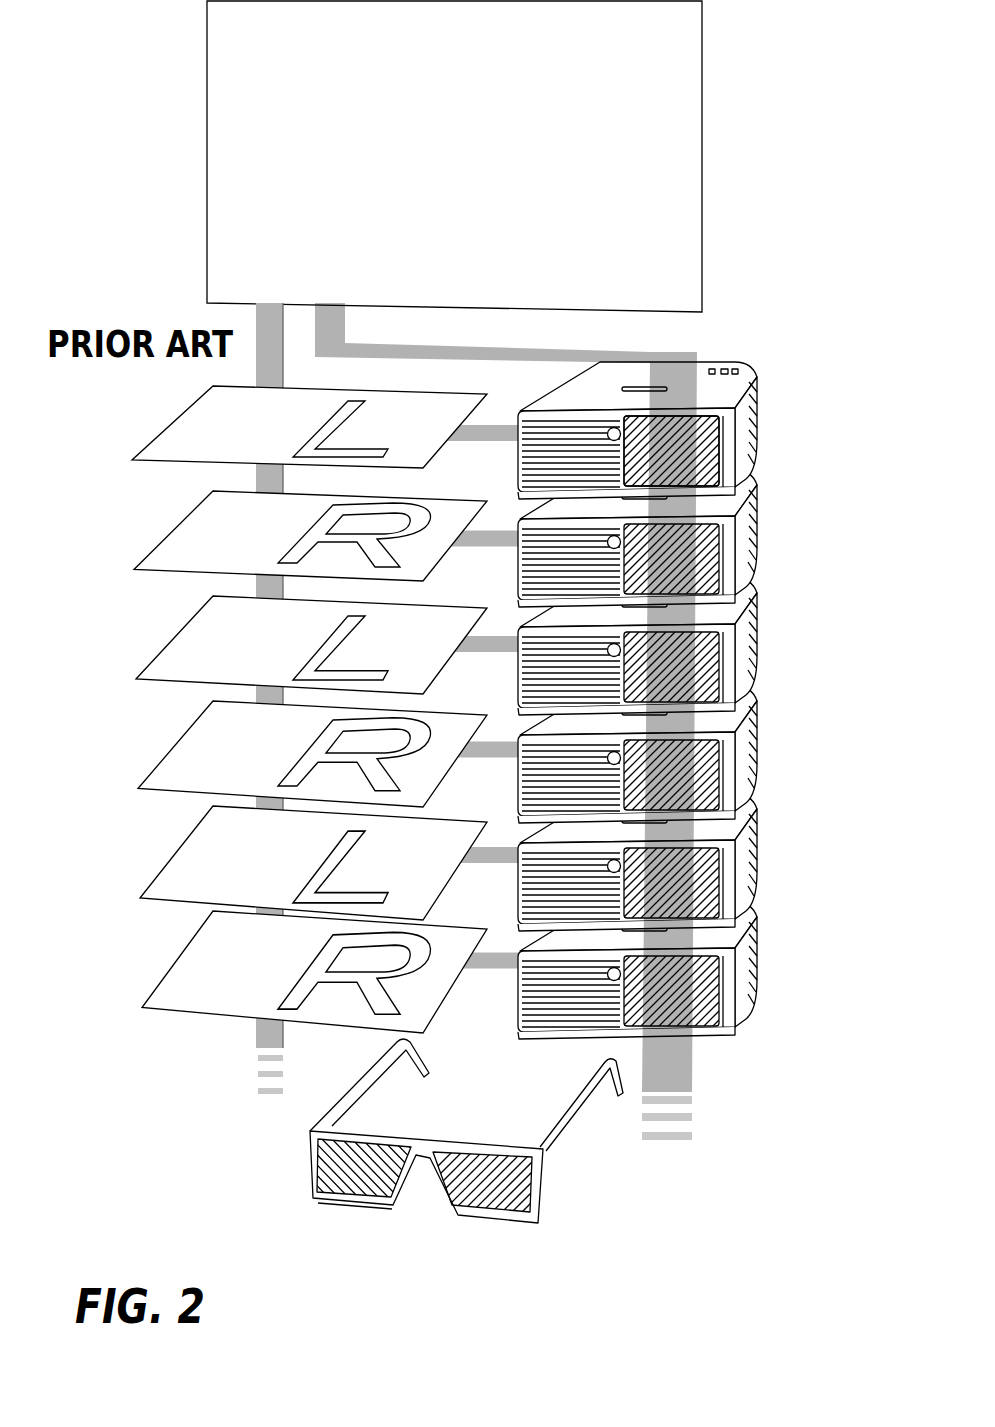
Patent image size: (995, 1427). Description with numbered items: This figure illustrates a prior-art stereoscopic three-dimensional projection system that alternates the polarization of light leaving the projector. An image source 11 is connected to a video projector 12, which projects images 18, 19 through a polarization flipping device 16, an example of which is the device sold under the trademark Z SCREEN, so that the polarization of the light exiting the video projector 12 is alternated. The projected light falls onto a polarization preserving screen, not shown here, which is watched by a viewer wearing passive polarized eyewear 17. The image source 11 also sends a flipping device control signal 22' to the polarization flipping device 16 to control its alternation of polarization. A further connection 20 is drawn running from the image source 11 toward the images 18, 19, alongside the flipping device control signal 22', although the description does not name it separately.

The image source 11 is at (200, 28).
The video projector 12 is at (755, 368).
The polarization flipping device 16 is at (706, 468).
The passive polarized eyewear 17 is at (300, 1159).
The image 18 is at (160, 438).
The image 19 is at (160, 543).
The image signal path 20 is at (270, 370).
The flipping device control signal 22' is at (506, 721).